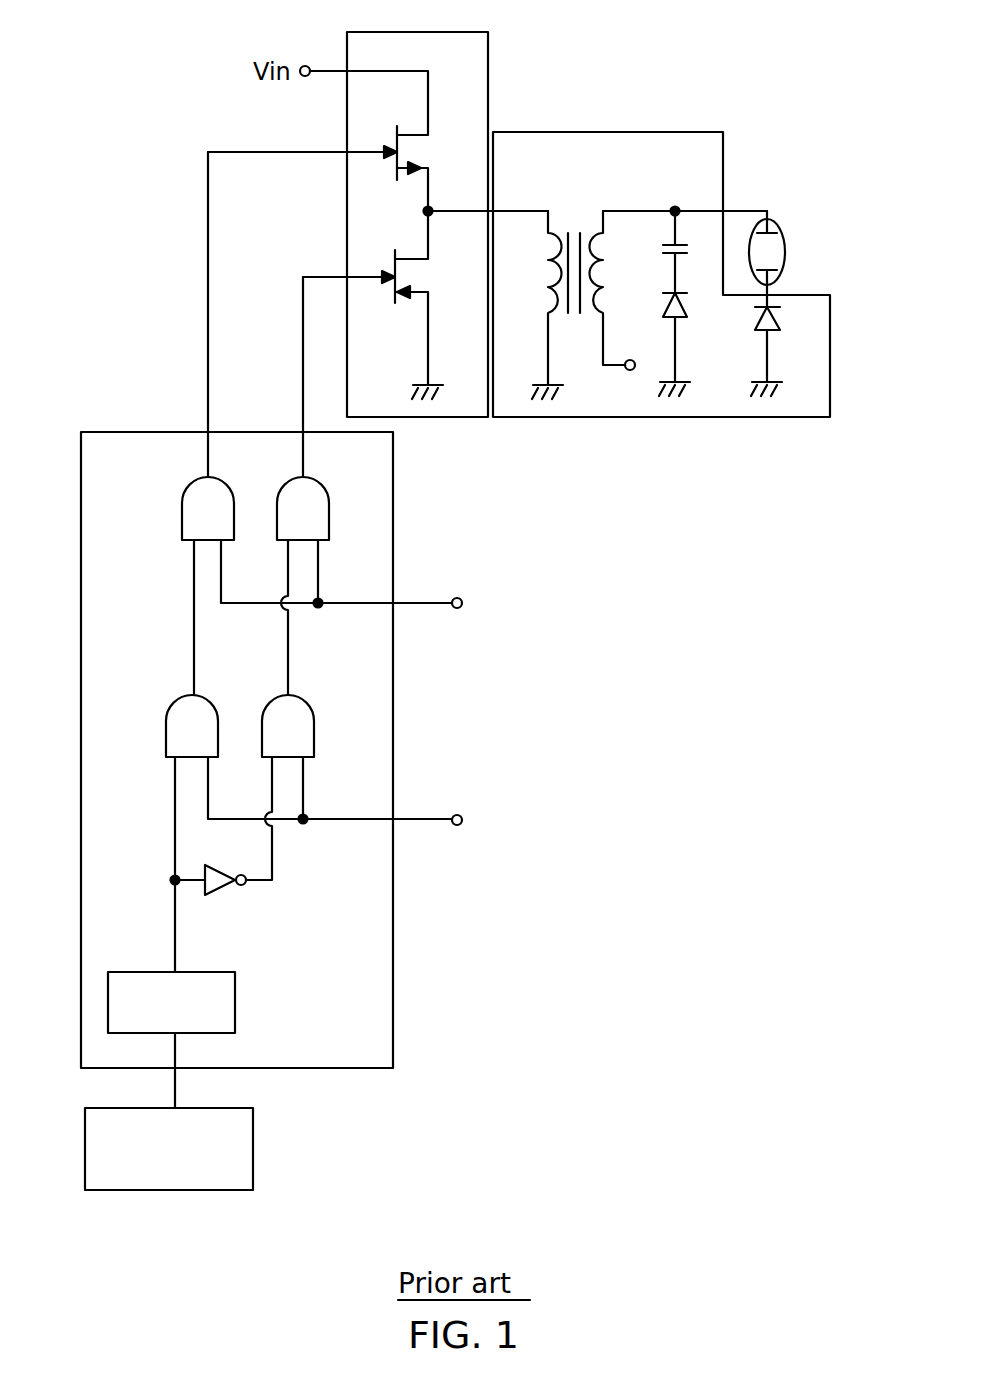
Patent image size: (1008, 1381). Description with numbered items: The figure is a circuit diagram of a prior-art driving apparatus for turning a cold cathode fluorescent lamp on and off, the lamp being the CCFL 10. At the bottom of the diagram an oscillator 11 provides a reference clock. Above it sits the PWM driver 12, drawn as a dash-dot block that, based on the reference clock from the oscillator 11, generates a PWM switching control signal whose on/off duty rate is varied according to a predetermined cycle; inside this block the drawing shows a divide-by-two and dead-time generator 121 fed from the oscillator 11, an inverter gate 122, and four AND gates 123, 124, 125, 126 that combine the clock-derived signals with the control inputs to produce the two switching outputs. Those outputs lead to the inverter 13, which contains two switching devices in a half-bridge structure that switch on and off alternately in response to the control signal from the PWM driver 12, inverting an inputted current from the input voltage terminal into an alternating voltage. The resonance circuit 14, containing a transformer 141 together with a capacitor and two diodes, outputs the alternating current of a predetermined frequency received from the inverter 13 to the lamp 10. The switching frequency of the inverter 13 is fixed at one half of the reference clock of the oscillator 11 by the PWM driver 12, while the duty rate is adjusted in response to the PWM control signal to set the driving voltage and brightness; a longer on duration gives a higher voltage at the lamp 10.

The CCFL 10 is at (785, 248).
The oscillator 11 is at (253, 1147).
The PWM driver 12 is at (393, 543).
The inverter 13 is at (489, 68).
The resonance circuit 14 is at (688, 131).
The divide-by-2 and dead time generator 121 is at (235, 1002).
The inverter 122 is at (220, 893).
The AND gate 123 is at (166, 715).
The AND gate 124 is at (315, 715).
The AND gate 125 is at (181, 505).
The AND gate 126 is at (328, 505).
The transformer 141 is at (577, 240).